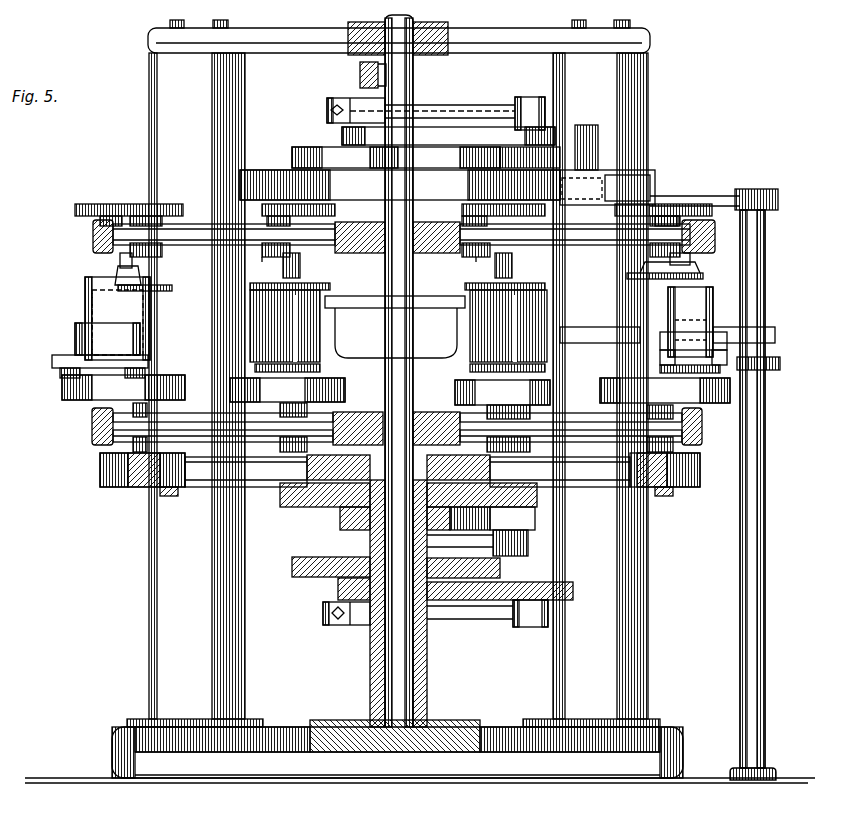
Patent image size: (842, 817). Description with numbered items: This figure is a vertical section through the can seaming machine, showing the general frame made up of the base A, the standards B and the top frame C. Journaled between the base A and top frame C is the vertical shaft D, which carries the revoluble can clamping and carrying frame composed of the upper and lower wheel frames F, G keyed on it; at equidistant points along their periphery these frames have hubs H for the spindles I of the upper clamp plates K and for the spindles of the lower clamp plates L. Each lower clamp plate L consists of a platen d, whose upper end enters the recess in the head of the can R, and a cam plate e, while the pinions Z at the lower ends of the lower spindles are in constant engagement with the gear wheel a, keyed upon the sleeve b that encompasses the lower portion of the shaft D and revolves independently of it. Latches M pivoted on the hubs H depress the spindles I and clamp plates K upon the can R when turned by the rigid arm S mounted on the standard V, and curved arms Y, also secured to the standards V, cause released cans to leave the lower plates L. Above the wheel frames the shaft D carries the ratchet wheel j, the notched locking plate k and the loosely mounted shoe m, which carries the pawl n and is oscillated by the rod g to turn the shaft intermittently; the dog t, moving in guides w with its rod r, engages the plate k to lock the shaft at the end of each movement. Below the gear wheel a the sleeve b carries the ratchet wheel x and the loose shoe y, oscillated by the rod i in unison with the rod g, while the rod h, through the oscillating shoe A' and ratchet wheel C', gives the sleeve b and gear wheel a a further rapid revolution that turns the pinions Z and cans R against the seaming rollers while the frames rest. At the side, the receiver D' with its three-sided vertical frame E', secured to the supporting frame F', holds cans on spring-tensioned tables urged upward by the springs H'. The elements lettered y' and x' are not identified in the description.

The base A is at (397, 748).
The standards B is at (398, 386).
The top frame C is at (399, 32).
The shaft D is at (400, 371).
The sleeve b is at (427, 642).
The clamp block y' is at (361, 75).
The rod g is at (460, 112).
The shoe m is at (448, 136).
The ratchet wheel j is at (396, 158).
The pawl n is at (530, 158).
The notched locking plate k is at (400, 185).
The dog t is at (562, 190).
The guides w is at (627, 188).
The rod r is at (584, 137).
The latches M is at (668, 195).
The rigid arm S is at (722, 205).
The standards V is at (757, 495).
The upper wheel frame F is at (404, 246).
The springs H' is at (361, 265).
The spindles I is at (118, 264).
The clamp plates K is at (165, 289).
The can body R is at (162, 323).
The cup x' is at (395, 327).
The curved arms Y is at (667, 336).
The receivers D' is at (392, 331).
The three-sided vertical frame E' is at (100, 329).
The platen d is at (150, 366).
The cam plate e is at (396, 390).
The clamp plates L is at (62, 390).
The lower wheel frame G is at (396, 419).
The hubs H is at (393, 432).
The pinions Z is at (100, 474).
The gear wheel a is at (203, 481).
The ratchet wheel C' is at (324, 493).
The oscillating shoe A' is at (482, 493).
The rod h is at (455, 541).
The shoe y is at (500, 579).
The ratchet wheel x is at (328, 591).
The rod i is at (492, 616).
The supporting frame F' is at (765, 353).